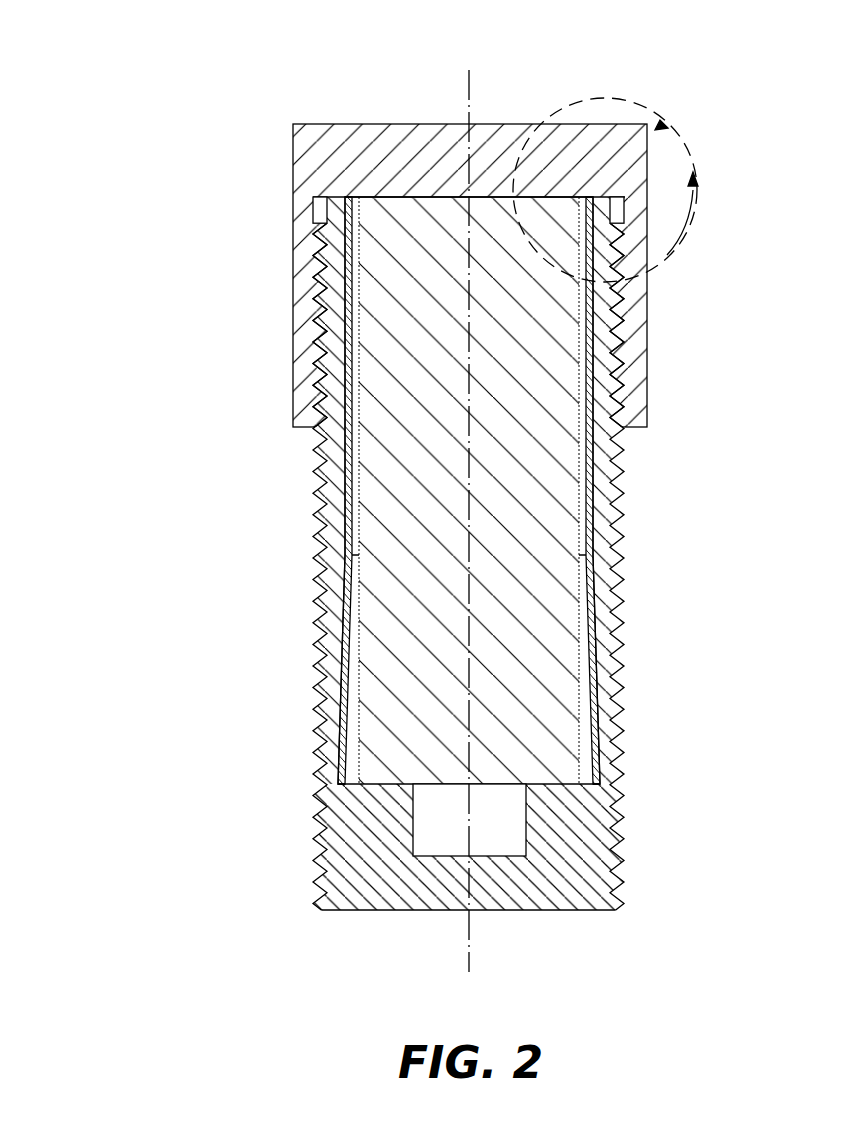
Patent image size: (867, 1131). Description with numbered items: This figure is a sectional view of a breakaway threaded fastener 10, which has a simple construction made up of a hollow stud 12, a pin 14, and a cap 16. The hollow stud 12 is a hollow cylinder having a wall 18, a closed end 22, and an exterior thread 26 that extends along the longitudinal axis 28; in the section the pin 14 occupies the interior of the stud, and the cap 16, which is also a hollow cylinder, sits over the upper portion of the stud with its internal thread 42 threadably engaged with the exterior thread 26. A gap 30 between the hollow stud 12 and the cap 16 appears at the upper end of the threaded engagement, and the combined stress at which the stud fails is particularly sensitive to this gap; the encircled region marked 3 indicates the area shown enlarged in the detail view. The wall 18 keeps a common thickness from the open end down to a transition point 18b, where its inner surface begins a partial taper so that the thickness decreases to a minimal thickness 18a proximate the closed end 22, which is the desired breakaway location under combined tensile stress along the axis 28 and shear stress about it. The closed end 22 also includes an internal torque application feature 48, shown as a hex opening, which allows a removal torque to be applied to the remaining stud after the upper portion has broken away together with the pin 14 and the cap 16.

The breakaway threaded fastener 10 is at (148, 62).
The hollow stud 12 is at (300, 755).
The pin 14 is at (410, 494).
The cap 16 is at (288, 242).
The wall 18 is at (549, 499).
The minimal thickness 18a is at (617, 786).
The transition point 18b is at (597, 553).
The closed end 22 is at (596, 912).
The exterior thread 26 is at (620, 696).
The longitudinal axis 28 is at (467, 957).
The gap 30 is at (625, 197).
The internal thread 42 is at (322, 298).
The internal torque application feature 48 is at (432, 837).
The detail circle for FIG. 3 is at (605, 190).